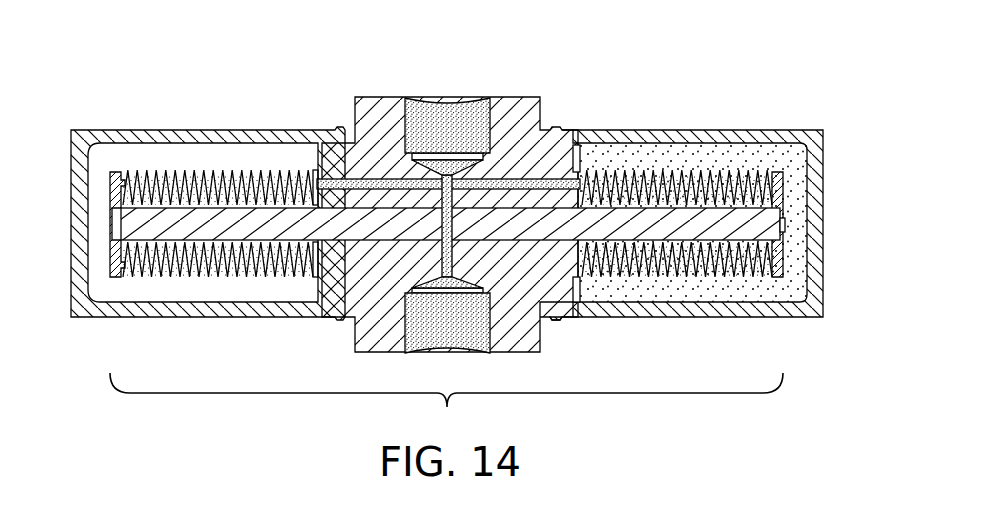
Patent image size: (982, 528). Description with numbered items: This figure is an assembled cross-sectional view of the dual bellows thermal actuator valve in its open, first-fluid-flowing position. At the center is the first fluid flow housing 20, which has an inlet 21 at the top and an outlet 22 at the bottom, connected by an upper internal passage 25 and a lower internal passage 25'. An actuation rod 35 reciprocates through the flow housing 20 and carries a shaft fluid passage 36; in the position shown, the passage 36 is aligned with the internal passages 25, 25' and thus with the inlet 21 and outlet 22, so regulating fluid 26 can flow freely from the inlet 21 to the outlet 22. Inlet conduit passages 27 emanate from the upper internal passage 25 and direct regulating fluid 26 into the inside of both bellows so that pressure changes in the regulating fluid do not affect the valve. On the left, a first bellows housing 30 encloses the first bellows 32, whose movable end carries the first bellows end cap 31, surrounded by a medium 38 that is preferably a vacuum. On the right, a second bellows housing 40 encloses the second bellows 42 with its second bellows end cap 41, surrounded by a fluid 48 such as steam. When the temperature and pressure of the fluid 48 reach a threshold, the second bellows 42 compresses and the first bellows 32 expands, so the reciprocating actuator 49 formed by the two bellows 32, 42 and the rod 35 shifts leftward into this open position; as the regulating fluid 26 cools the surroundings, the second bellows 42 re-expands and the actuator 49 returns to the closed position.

The first fluid flow housing 20 is at (521, 107).
The inlet 21 is at (492, 123).
The outlet 22 is at (486, 333).
The upper internal passage 25 is at (421, 116).
The lower internal passage 25' is at (424, 329).
The regulating fluid 26 is at (208, 170).
The inlet conduit passages 27 is at (447, 198).
The first bellows housing 30 is at (176, 138).
The first bellows end cap 31 is at (111, 173).
The first bellows 32 is at (233, 266).
The actuation rod 35 is at (361, 240).
The shaft fluid passage 36 is at (452, 226).
The medium 38 is at (149, 165).
The second bellows housing 40 is at (660, 140).
The second bellows end cap 41 is at (780, 263).
The second bellows 42 is at (705, 173).
The fluid 48 is at (775, 160).
The reciprocating actuator 49 is at (446, 406).